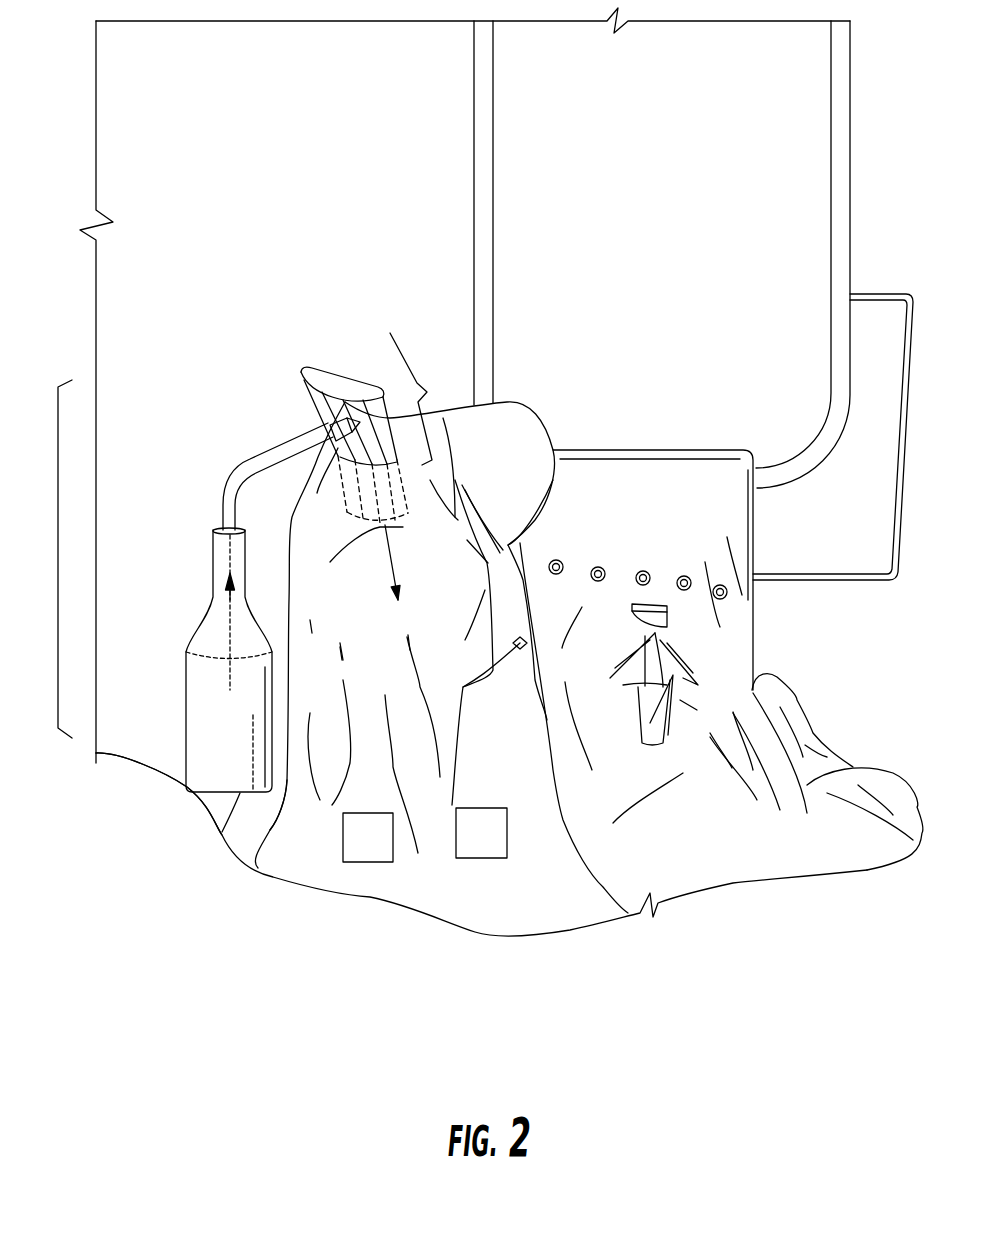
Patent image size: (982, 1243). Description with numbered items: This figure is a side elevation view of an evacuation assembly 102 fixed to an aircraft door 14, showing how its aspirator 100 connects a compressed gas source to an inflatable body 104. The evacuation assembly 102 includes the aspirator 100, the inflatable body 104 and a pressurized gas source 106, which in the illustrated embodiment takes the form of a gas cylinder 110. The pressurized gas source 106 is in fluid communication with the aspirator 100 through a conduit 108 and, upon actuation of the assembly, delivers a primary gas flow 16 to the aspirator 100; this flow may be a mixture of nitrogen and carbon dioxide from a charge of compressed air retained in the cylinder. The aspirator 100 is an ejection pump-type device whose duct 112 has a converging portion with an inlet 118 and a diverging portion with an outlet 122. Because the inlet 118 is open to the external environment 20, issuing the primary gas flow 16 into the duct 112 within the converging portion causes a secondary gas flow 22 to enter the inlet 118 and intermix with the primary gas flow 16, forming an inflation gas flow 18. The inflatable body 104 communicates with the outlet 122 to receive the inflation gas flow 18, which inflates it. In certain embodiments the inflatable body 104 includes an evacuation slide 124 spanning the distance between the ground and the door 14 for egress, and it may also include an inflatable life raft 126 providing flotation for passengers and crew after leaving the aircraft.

The door 14 is at (757, 325).
The external environment 20 is at (241, 232).
The secondary gas flow 22 is at (317, 340).
The aspirator 100 is at (509, 634).
The evacuation assembly 102 is at (167, 833).
The inflatable body 104 is at (293, 772).
The pressurized gas source 106 is at (58, 560).
The conduit 108 is at (243, 465).
The gas cylinder 110 is at (193, 680).
The duct 112 is at (325, 398).
The inlet 118 is at (350, 372).
The outlet 122 is at (403, 527).
The evacuation slide 124 is at (368, 862).
The inflatable life raft 126 is at (482, 860).
The primary gas flow 16 is at (228, 618).
The inflation gas flow 18 is at (357, 538).